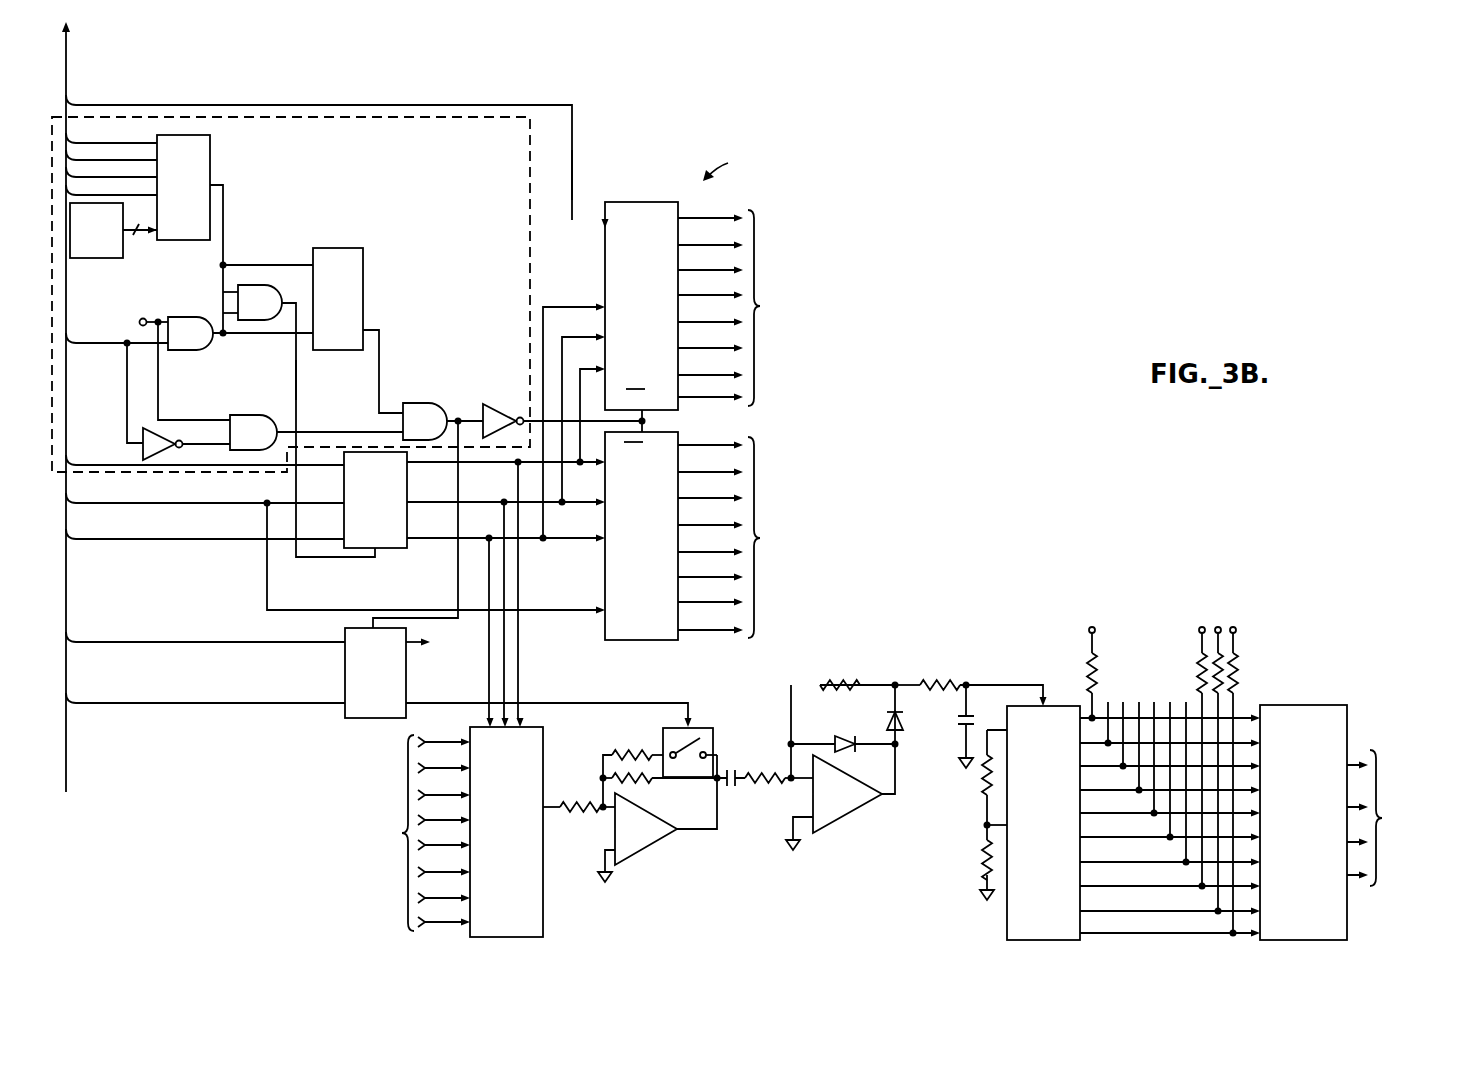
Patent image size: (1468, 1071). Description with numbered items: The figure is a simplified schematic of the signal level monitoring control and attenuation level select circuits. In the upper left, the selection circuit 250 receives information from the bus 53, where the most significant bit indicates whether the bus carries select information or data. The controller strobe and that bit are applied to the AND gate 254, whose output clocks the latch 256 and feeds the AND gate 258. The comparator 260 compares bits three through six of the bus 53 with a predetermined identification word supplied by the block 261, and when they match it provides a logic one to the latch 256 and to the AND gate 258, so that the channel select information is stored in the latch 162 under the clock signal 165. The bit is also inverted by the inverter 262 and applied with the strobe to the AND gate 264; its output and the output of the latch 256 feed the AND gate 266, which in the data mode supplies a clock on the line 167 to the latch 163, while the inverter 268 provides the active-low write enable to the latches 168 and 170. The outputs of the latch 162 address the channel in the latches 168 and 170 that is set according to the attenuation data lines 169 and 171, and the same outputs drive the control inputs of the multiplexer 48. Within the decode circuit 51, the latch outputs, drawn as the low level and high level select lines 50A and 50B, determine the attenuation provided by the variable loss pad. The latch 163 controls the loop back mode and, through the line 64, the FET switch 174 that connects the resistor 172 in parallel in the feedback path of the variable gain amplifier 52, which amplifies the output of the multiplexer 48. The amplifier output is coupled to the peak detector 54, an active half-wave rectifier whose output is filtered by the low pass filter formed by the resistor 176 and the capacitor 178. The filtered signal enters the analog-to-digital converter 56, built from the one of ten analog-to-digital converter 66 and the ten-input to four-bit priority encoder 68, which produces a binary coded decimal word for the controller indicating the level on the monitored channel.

The bus 53 is at (68, 42).
The attenuation data line 169 is at (573, 150).
The selection circuit 250 is at (531, 278).
The comparator 260 is at (210, 140).
The identification word block 261 is at (123, 256).
The AND gate 254 is at (183, 316).
The AND gate 258 is at (268, 284).
The clock signal 165 is at (297, 382).
The latch 256 is at (340, 247).
The AND gate 264 is at (250, 414).
The inverter 262 is at (172, 455).
The AND gate 266 is at (420, 402).
The inverter 268 is at (500, 402).
The latch 162 is at (407, 548).
The clock signal 167 is at (412, 617).
The attenuation data line 171 is at (548, 612).
The latch 168 is at (605, 206).
The decode circuit 51 is at (727, 166).
The low level atten select lines 50A is at (700, 386).
The hi level attenuation latch 170 is at (648, 640).
The hi level atten select lines 50B is at (700, 619).
The latch 163 is at (345, 712).
The line 64 is at (668, 703).
The multiplexer 48 is at (543, 905).
The variable gain amplifier 52 is at (646, 865).
The resistor 172 is at (637, 750).
The FET switch 174 is at (708, 728).
The peak detector 54 is at (851, 835).
The resistor 176 is at (928, 680).
The capacitor 178 is at (956, 717).
The one of ten analog-to-digital converter 66 is at (1007, 935).
The analog-to-digital converter 56 is at (1138, 942).
The priority encoder 68 is at (1347, 930).